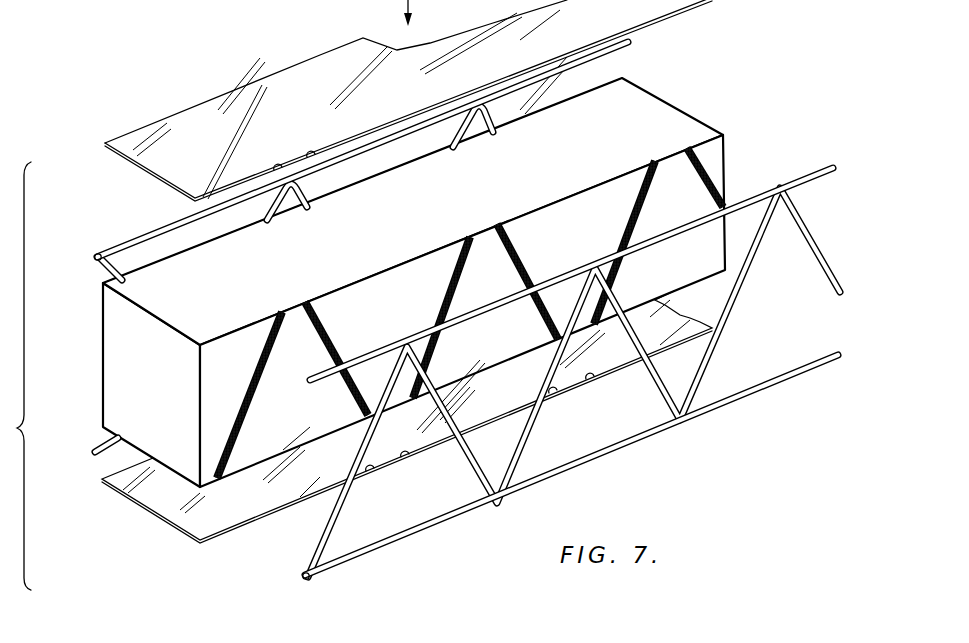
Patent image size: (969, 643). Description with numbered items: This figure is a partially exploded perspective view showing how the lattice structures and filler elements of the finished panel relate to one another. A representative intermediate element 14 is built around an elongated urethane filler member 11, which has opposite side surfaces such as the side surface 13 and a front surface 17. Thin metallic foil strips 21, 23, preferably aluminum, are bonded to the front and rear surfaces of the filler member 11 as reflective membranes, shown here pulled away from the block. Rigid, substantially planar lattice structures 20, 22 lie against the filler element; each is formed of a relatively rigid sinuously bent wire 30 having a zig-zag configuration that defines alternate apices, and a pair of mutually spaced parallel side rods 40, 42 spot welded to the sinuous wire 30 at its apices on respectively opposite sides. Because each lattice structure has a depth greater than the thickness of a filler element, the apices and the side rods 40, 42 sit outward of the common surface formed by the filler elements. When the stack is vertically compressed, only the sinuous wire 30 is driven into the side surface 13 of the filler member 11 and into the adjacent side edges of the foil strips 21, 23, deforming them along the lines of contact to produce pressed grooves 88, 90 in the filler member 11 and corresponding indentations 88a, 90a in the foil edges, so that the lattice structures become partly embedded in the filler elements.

The urethane filler member 11 is at (114, 393).
The side surface 13 is at (476, 363).
The intermediate element 14 is at (100, 352).
The front surface 17 is at (622, 143).
The lattice structure 20 is at (99, 252).
The foil strip 21 is at (218, 105).
The lattice structure 22 is at (412, 542).
The foil strip 23 is at (161, 506).
The sinuously bent wire 30 is at (281, 214).
The side rod 40 is at (191, 215).
The side rod 42 is at (341, 567).
The pressed groove 88 is at (260, 358).
The indentation 88a is at (281, 155).
The pressed groove 90 is at (343, 317).
The indentation 90a is at (311, 155).